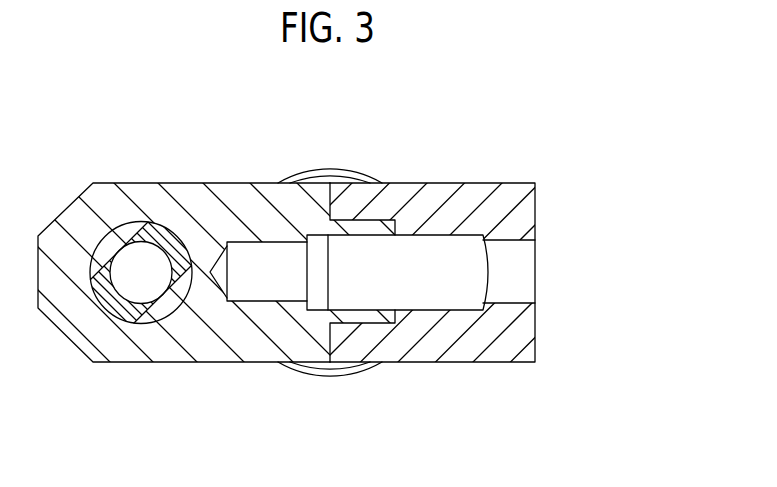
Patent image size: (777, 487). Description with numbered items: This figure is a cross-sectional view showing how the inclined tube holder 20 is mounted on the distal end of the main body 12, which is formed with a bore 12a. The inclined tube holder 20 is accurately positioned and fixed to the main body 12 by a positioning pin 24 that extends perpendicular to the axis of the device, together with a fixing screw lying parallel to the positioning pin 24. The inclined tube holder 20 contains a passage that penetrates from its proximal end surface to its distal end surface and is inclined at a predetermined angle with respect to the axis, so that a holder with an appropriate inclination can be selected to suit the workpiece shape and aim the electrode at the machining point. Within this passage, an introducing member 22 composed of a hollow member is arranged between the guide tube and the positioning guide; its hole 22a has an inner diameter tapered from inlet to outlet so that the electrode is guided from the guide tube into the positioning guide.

The main body 12 is at (522, 202).
The bore 12a is at (510, 296).
The inclined tube holder 20 is at (103, 208).
The introducing member 22 is at (167, 303).
The hole 22a is at (122, 288).
The positioning pin 24 is at (408, 257).